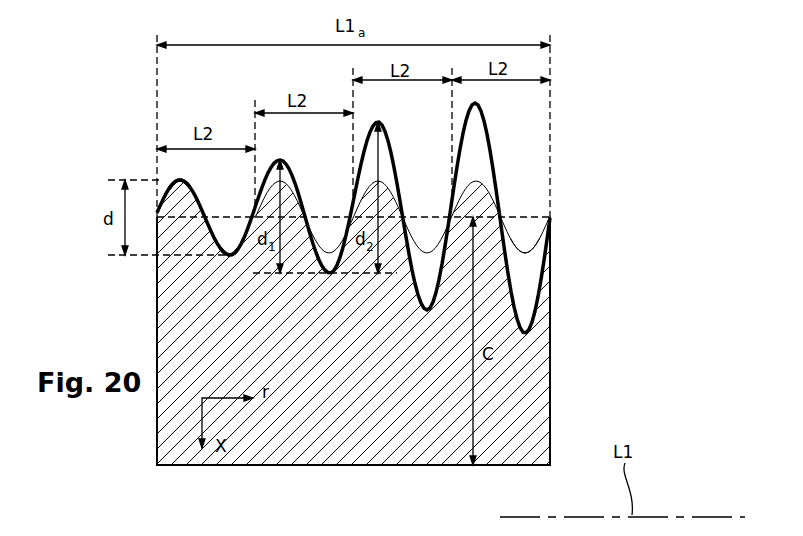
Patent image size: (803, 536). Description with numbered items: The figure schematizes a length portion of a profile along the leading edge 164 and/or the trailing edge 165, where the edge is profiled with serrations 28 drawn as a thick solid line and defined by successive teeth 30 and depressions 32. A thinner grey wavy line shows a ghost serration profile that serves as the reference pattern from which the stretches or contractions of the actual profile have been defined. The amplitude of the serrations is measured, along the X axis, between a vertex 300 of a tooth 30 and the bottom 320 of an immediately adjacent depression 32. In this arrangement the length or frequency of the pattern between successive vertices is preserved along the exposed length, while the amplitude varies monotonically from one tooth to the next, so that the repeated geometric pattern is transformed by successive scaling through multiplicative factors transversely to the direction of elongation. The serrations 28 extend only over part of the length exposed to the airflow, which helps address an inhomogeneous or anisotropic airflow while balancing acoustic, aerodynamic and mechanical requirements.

The serrations 28 is at (502, 113).
The teeth 30 is at (492, 166).
The depressions 32 is at (525, 243).
The leading edge 164 is at (512, 208).
The trailing edge 165 is at (158, 465).
The vertex of tooth 300 is at (181, 177).
The bottom of depression 320 is at (230, 259).